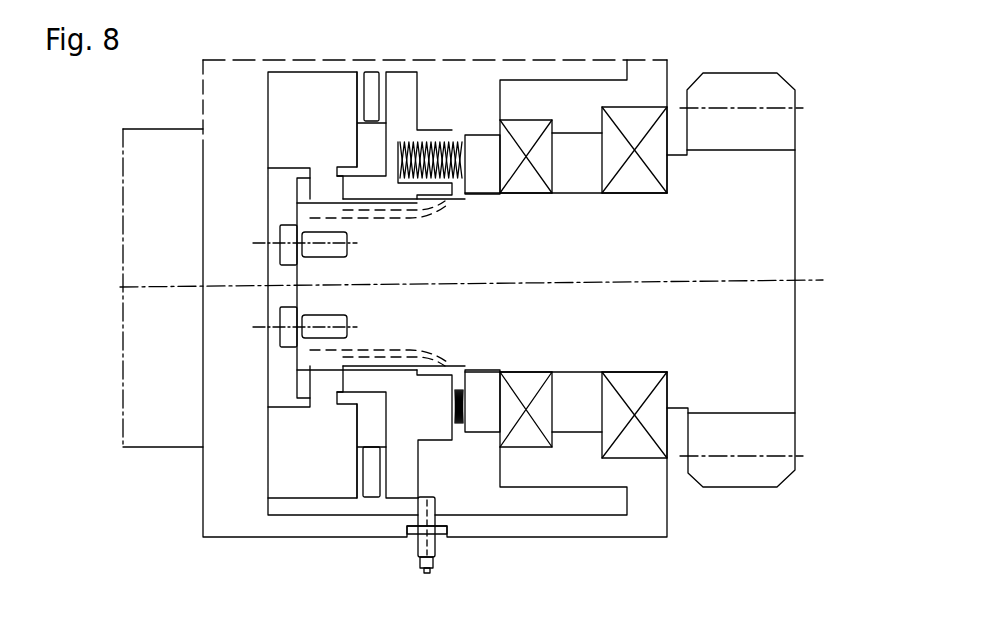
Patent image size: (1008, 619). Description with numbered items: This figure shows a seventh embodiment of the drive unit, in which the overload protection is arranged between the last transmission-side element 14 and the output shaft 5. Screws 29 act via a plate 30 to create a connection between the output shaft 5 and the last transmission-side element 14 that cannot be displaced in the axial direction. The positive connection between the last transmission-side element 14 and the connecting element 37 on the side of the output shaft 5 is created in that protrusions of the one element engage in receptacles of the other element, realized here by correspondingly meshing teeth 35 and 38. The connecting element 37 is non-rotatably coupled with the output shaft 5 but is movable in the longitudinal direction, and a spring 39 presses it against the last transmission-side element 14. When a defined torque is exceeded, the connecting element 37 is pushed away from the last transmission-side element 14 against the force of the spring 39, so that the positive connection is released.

The last transmission-side element 14 is at (292, 93).
The output shaft 5 is at (785, 255).
The screws 29 is at (281, 244).
The plate 30 is at (302, 295).
The teeth 35 is at (360, 96).
The connecting element 37 is at (418, 97).
The teeth 38 is at (374, 85).
The spring 39 is at (452, 132).